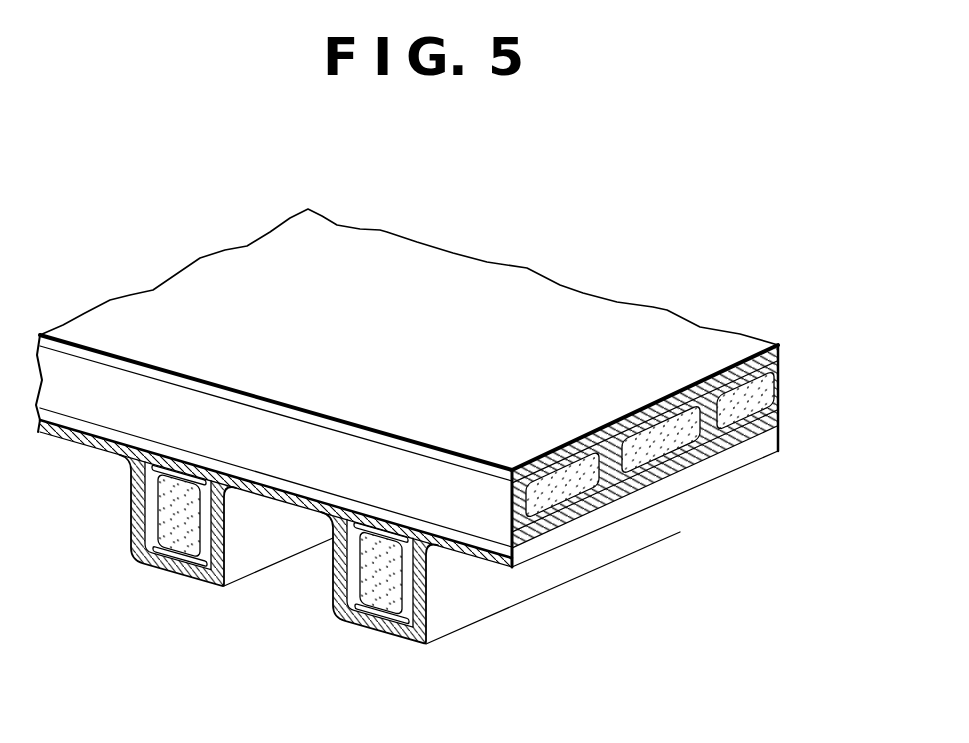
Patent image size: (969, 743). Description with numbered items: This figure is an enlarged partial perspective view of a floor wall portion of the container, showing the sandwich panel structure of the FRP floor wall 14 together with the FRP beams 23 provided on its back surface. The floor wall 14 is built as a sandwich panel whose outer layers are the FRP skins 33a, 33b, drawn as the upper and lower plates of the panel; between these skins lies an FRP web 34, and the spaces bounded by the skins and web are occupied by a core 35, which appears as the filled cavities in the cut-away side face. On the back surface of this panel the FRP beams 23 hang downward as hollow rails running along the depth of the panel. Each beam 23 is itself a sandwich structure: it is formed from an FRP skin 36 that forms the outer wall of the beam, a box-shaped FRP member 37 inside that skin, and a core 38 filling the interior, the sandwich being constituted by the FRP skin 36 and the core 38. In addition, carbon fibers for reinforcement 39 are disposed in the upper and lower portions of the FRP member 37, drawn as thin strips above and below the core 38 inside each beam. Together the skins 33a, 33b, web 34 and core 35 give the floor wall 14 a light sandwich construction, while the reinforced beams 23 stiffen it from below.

The FRP floor wall 14 is at (664, 297).
The FRP beam 23 is at (522, 607).
The FRP skin 33a is at (473, 270).
The FRP skin 33b is at (779, 427).
The FRP web 34 is at (687, 445).
The core 35 is at (678, 448).
The FRP skin 36 is at (337, 615).
The box-shaped FRP member 37 is at (352, 563).
The core 38 is at (381, 586).
The carbon fibers for reinforcement 39 is at (167, 463).